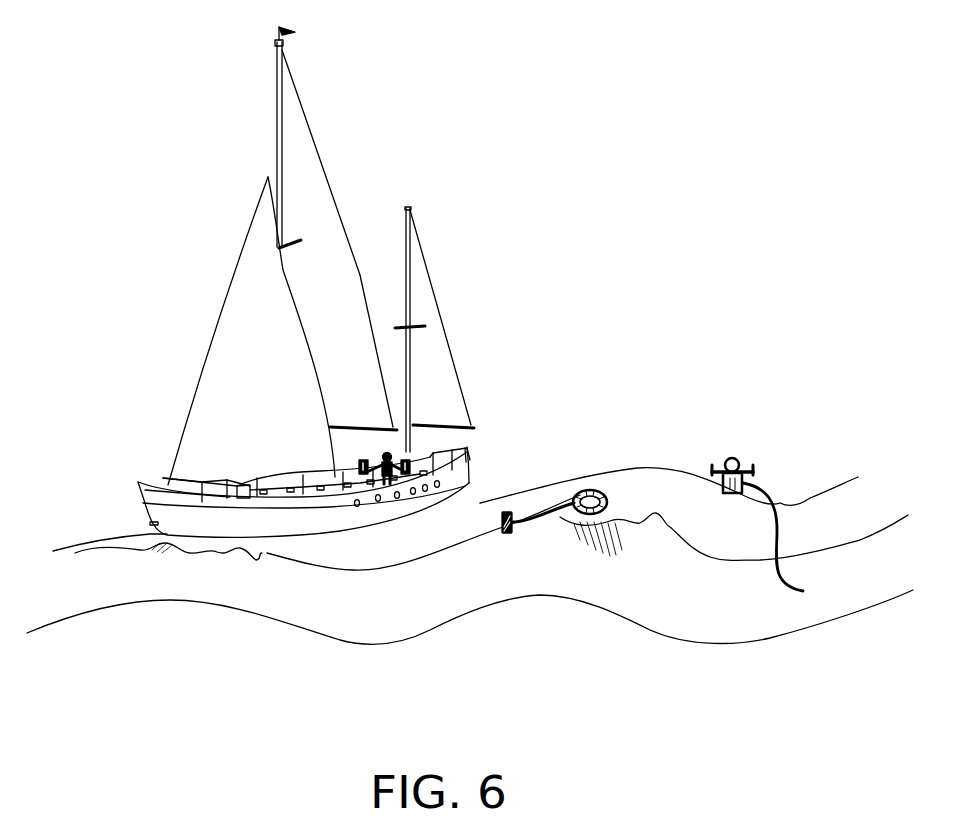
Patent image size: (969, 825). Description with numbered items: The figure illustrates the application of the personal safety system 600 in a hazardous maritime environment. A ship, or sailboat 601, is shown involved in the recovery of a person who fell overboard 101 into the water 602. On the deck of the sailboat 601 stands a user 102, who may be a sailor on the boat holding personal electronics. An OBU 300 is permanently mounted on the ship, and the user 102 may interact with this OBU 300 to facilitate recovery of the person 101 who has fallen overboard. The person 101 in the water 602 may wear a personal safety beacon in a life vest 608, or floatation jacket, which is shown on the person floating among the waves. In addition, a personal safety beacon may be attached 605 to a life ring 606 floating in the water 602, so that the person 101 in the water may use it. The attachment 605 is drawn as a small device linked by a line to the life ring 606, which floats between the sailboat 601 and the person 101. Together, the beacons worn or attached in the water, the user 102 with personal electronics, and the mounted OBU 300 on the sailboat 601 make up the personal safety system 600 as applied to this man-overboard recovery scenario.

The person who fell overboard 101 is at (740, 460).
The user 102 is at (395, 457).
The OBU 300 is at (357, 463).
The personal safety system 600 is at (655, 667).
The sailboat 601 is at (297, 523).
The water 602 is at (253, 605).
The attachment 605 is at (507, 533).
The life ring 606 is at (595, 490).
The life vest 608 is at (800, 544).